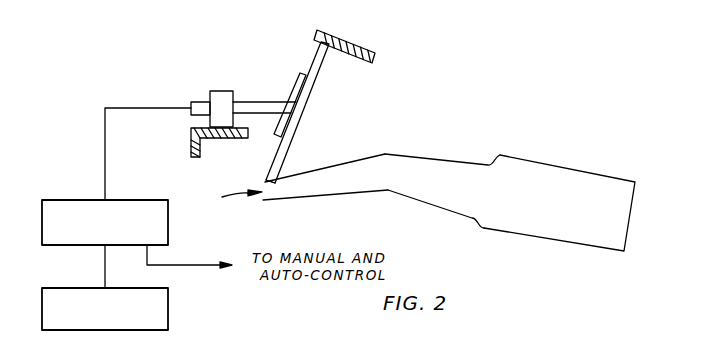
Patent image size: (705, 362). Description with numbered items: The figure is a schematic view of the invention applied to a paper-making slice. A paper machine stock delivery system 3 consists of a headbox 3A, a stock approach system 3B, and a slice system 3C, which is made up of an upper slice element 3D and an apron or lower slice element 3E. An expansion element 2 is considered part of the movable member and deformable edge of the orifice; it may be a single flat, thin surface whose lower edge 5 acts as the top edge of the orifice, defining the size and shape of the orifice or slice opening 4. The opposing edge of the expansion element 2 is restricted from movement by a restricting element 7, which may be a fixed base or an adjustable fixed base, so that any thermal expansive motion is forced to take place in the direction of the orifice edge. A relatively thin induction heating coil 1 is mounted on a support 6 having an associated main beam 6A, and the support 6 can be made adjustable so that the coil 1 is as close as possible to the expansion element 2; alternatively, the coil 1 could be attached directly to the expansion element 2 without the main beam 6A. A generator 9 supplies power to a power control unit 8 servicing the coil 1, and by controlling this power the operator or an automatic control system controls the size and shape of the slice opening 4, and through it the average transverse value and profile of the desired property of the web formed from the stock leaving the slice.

The coil 1 is at (297, 79).
The expansion element 2 is at (309, 93).
The paper machine stock delivery system 3 is at (449, 190).
The headbox 3A is at (572, 212).
The stock approach system 3B is at (453, 194).
The slice system 3C is at (325, 180).
The upper slice element 3D is at (352, 137).
The apron or lower slice element 3E is at (317, 199).
The orifice or slice opening 4 is at (233, 198).
The lower edge 5 is at (265, 181).
The support 6 is at (202, 102).
The main beam 6A is at (191, 145).
The restricting element 7 is at (363, 48).
The power control unit 8 is at (170, 233).
The generator 9 is at (170, 318).